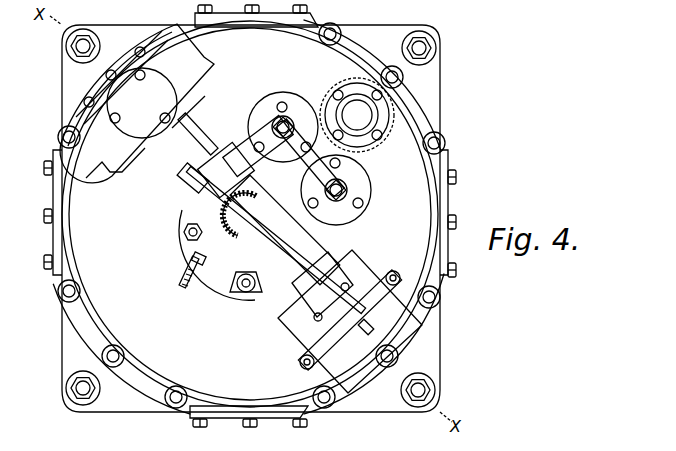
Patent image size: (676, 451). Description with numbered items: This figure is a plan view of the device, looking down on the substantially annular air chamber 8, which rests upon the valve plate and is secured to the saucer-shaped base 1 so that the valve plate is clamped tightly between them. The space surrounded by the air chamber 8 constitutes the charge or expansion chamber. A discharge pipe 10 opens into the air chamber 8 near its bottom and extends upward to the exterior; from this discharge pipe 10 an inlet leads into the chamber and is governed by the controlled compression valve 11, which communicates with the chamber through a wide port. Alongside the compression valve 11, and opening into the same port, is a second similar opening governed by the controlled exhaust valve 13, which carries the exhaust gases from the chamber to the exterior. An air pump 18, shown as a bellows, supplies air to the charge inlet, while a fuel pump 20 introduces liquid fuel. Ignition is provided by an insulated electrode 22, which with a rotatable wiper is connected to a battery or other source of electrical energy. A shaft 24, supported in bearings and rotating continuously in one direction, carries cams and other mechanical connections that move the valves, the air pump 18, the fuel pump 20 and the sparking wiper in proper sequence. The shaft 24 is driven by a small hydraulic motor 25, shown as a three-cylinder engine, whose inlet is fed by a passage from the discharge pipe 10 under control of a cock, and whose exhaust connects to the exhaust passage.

The concave base 1 is at (250, 216).
The air chamber 8 is at (249, 217).
The discharge pipe 10 is at (357, 115).
The compression valve 11 is at (323, 172).
The exhaust valve 13 is at (258, 145).
The air pump 18 is at (350, 321).
The fuel pump 20 is at (250, 300).
The insulated electrode 22 is at (200, 292).
The shaft 24 is at (147, 178).
The hydraulic motor 25 is at (139, 103).